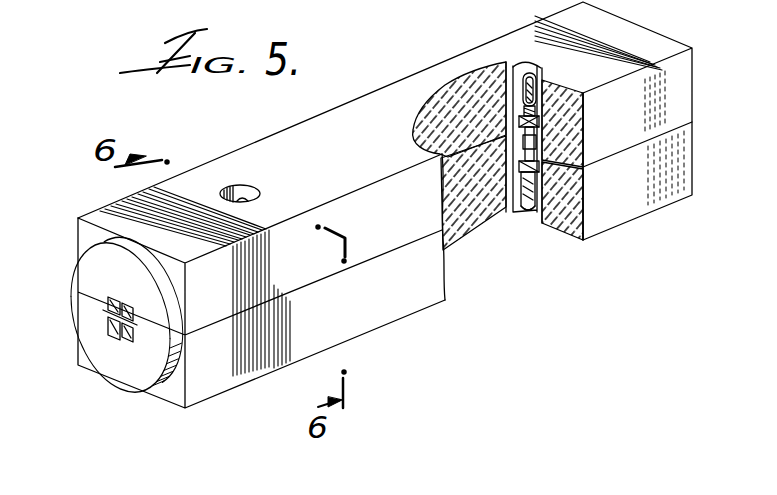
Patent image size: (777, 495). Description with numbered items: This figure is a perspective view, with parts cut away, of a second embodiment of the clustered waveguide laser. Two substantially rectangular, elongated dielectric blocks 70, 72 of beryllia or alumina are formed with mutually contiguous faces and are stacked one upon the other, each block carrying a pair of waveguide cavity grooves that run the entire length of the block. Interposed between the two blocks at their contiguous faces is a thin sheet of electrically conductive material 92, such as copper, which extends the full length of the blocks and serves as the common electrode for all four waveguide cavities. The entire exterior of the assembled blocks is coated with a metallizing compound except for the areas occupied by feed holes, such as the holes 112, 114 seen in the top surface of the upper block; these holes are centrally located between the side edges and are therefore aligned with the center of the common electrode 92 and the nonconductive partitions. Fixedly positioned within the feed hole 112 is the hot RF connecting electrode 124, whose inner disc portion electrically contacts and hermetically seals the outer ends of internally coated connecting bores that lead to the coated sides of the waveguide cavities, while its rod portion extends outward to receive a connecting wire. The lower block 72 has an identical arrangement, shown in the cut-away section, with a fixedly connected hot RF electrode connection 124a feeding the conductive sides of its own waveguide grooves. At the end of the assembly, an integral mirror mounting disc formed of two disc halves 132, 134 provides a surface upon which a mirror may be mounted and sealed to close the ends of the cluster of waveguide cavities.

The first dielectric block 70 is at (681, 83).
The second dielectric block 72 is at (685, 165).
The sheet of electrically conductive material 92 is at (522, 153).
The feed hole 112 is at (522, 64).
The feed hole 114 is at (248, 190).
The hot RF connecting electrode 124 is at (545, 78).
The hot RF electrode connection 124a is at (527, 230).
The disc half 132 is at (90, 263).
The disc half 134 is at (92, 338).